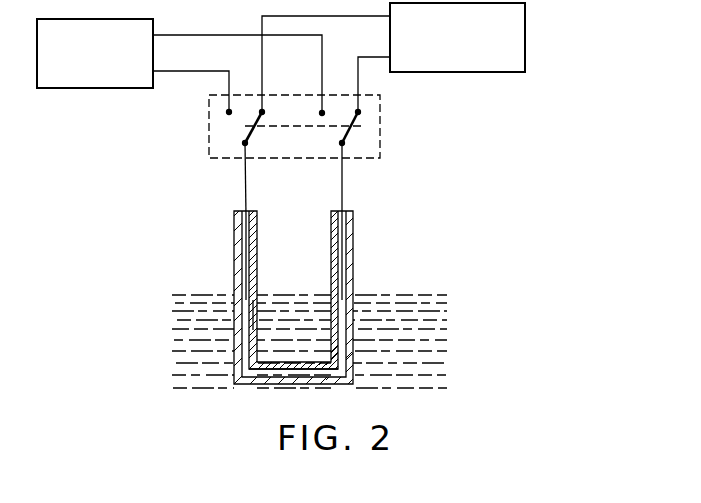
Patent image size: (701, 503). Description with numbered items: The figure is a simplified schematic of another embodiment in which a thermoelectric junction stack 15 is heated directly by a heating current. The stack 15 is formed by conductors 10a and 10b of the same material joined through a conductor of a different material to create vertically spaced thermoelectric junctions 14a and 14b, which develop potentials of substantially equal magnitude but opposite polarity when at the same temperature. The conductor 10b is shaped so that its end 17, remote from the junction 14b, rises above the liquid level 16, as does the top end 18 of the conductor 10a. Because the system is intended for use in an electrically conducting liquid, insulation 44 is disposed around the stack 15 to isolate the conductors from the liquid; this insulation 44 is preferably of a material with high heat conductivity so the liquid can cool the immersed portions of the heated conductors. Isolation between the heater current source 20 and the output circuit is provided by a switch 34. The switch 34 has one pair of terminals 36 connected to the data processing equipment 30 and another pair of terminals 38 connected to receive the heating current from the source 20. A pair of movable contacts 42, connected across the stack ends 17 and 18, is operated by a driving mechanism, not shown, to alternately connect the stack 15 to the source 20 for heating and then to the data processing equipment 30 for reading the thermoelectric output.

The source 20 is at (95, 69).
The data processing equipment 30 is at (515, 19).
The switch 34 is at (209, 141).
The pair of terminals 36 is at (268, 108).
The pair of terminals 38 is at (225, 113).
The movable contacts 42 is at (250, 134).
The top end 18 is at (250, 211).
The end 17 is at (346, 212).
The thermoelectric junction stack 15 is at (277, 305).
The conductor 10a is at (250, 226).
The conductor 10b is at (250, 343).
The thermoelectric junction 14a is at (252, 270).
The thermoelectric junction 14b is at (262, 300).
The insulation 44 is at (346, 262).
The surface 16 is at (418, 293).